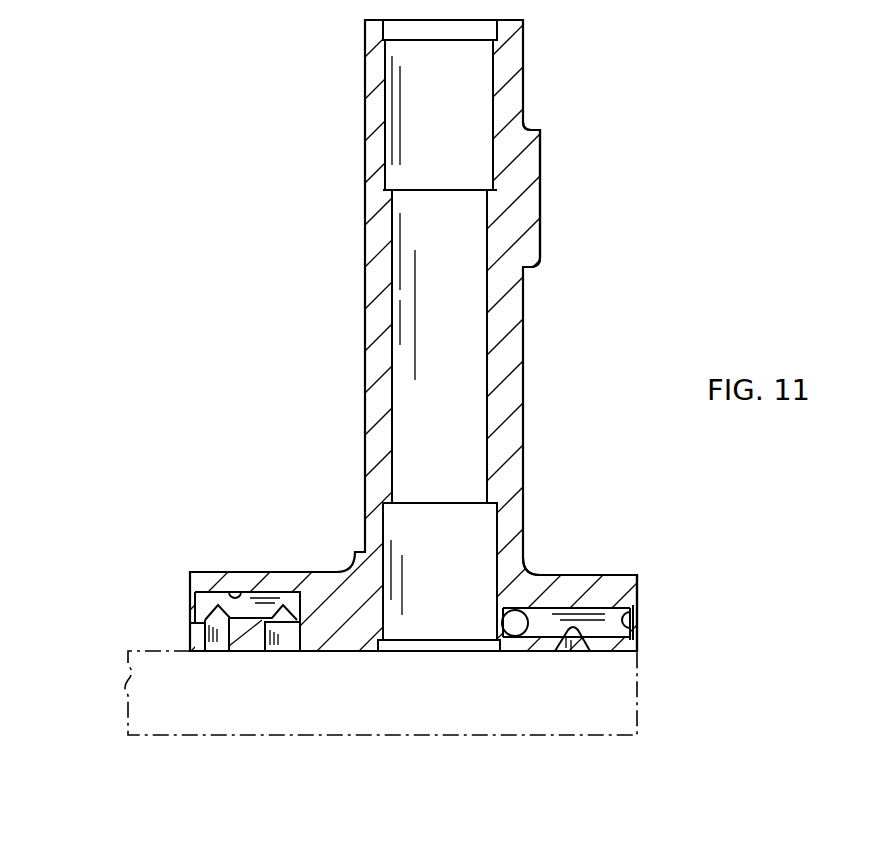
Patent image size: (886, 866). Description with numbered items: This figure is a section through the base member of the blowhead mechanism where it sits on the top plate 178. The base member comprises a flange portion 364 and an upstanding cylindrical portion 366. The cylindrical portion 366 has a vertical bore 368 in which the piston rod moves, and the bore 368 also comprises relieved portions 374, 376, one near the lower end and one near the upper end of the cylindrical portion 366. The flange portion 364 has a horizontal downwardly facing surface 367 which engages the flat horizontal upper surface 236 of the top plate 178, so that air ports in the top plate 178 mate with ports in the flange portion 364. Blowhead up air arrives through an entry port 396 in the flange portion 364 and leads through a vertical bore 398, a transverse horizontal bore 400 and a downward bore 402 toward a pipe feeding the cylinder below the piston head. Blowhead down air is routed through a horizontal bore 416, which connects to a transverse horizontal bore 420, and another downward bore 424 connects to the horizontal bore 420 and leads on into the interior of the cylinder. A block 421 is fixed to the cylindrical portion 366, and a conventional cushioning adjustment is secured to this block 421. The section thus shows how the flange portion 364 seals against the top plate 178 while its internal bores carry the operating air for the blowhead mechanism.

The top plate 178 is at (135, 676).
The upper surface 236 is at (186, 647).
The flange portion 364 is at (580, 575).
The cylindrical portion 366 is at (515, 324).
The downwardly facing surface 367 is at (365, 652).
The vertical bore 368 is at (391, 283).
The relieved portion 374 is at (383, 517).
The relieved portion 376 is at (489, 96).
The entry port 396 is at (213, 652).
The vertical bore 398 is at (197, 642).
The transverse horizontal bore 400 is at (224, 598).
The downward bore 402 is at (283, 652).
The horizontal bore 416 is at (516, 637).
The transverse horizontal bore 420 is at (637, 627).
The block 421 is at (540, 172).
The downward bore 424 is at (575, 650).